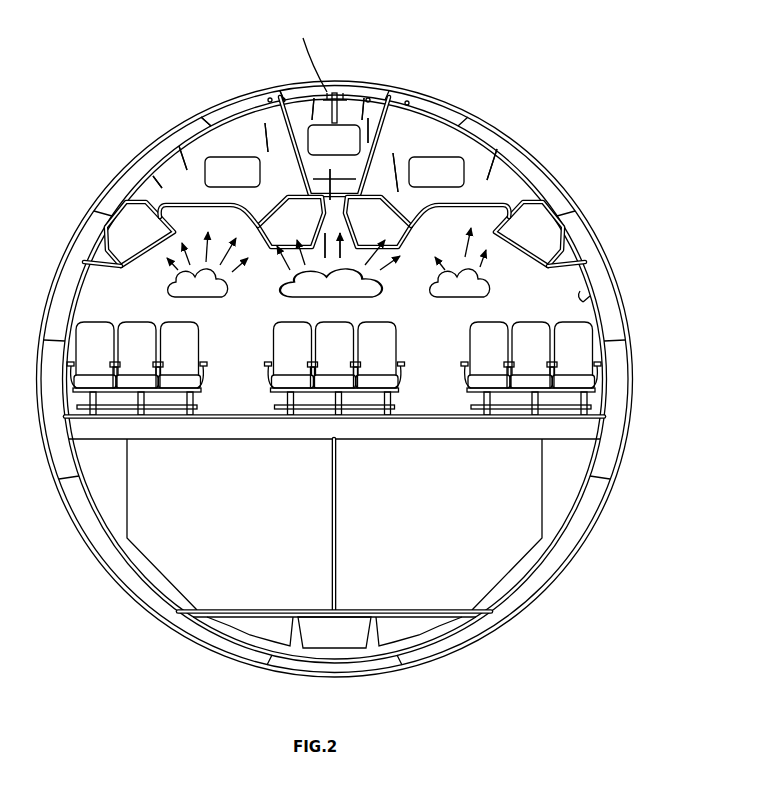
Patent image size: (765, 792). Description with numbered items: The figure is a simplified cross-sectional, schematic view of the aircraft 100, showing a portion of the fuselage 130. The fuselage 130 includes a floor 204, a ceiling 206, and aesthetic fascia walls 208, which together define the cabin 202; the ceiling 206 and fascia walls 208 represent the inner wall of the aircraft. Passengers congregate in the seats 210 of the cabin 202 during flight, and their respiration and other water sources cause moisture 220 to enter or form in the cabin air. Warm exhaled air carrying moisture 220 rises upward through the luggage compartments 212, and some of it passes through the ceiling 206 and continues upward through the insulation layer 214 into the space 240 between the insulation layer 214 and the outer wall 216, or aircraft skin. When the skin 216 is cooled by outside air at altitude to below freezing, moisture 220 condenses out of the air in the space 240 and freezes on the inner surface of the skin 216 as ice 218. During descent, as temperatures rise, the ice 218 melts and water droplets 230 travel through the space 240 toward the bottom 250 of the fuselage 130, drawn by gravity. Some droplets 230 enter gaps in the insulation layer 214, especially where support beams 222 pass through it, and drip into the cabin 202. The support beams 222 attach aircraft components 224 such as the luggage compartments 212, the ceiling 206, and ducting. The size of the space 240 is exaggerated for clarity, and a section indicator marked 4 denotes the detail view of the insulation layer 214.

The aircraft 100 is at (120, 83).
The section view indicator 4 is at (307, 57).
The fuselage 130 is at (528, 152).
The insulation layer 214 is at (157, 165).
The outer wall 216 is at (228, 100).
The ice 218 is at (353, 90).
The water droplets 230 is at (410, 103).
The support beams 222 is at (470, 127).
The ceiling 206 is at (528, 195).
The aircraft components 224 is at (334, 146).
The luggage compartments 212 is at (334, 231).
The space 240 is at (223, 117).
The cabin 202 is at (133, 282).
The aesthetic fascia walls 208 is at (583, 291).
The moisture 220 is at (226, 290).
The seats 210 is at (137, 332).
The floor 204 is at (587, 428).
The bottom 250 is at (328, 665).